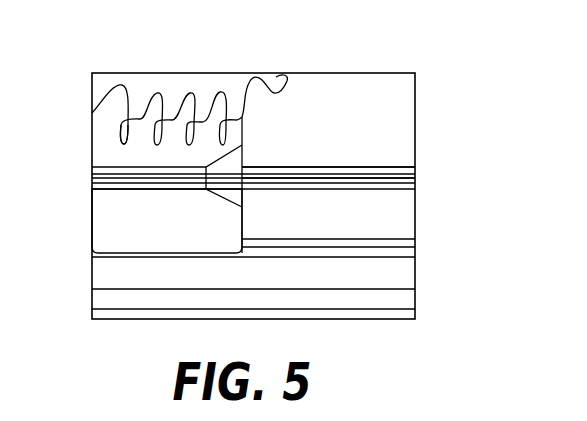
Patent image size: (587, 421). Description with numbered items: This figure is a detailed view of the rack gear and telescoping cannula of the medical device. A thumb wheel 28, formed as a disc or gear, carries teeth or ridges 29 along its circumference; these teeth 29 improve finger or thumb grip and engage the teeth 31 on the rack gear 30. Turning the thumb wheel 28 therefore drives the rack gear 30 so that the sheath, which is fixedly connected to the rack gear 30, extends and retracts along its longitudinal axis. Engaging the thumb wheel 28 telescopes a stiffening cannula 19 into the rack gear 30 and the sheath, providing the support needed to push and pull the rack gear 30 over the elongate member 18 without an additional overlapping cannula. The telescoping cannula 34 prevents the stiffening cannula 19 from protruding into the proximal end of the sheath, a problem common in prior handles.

The elongate member 18 is at (415, 179).
The stiffening cannula 19 is at (383, 166).
The thumb wheel 28 is at (200, 87).
The teeth 29 is at (265, 83).
The rack gear 30 is at (113, 223).
The teeth 31 is at (138, 135).
The telescoping cannula 34 is at (100, 180).